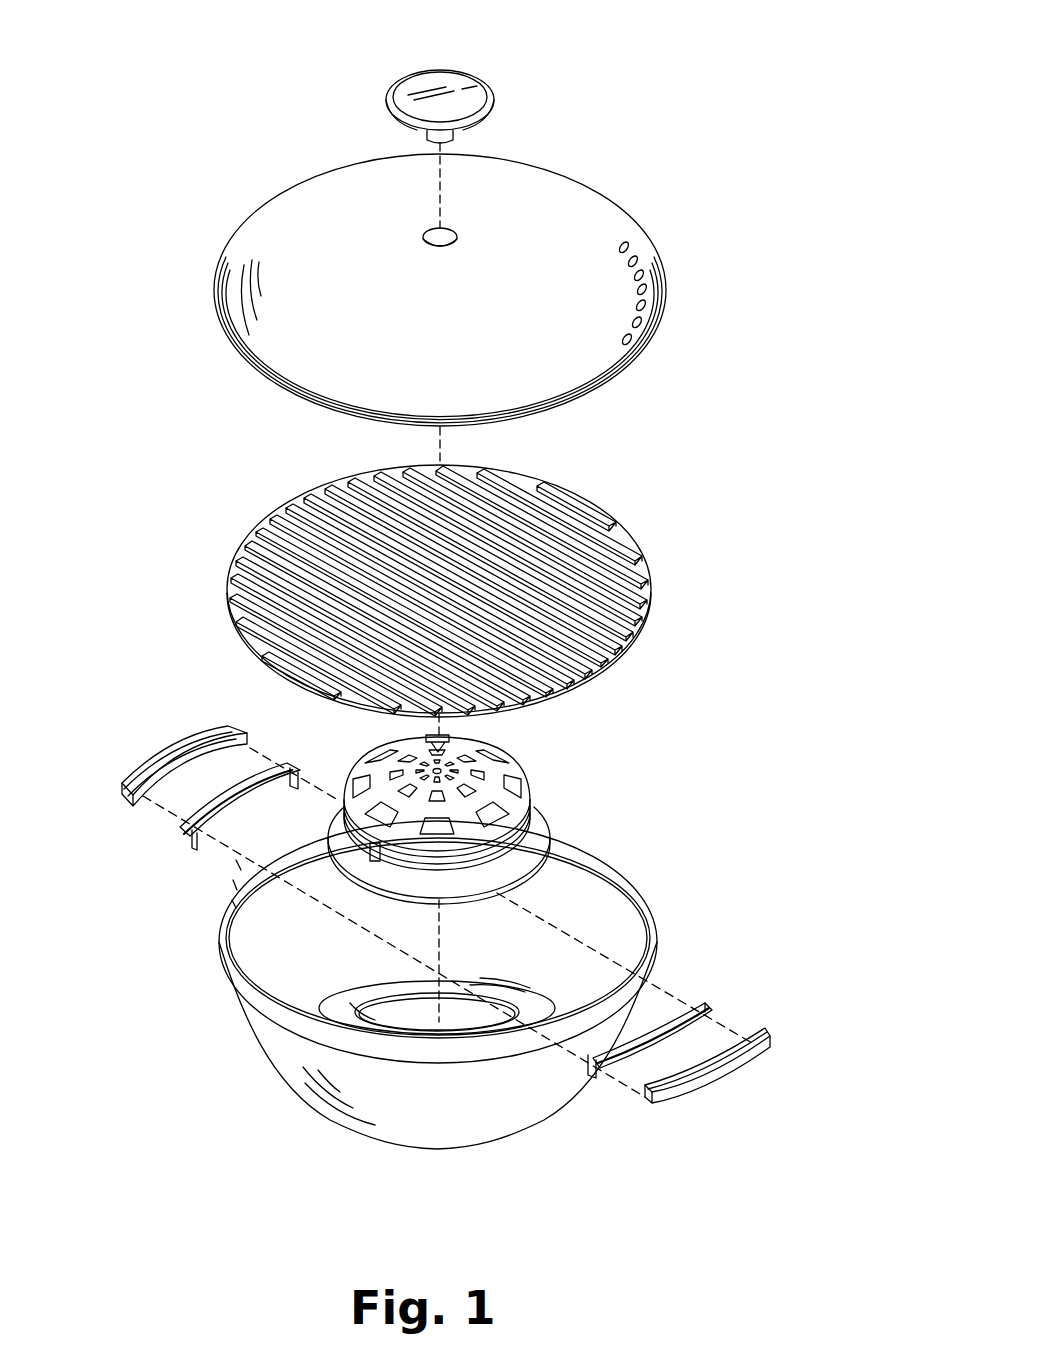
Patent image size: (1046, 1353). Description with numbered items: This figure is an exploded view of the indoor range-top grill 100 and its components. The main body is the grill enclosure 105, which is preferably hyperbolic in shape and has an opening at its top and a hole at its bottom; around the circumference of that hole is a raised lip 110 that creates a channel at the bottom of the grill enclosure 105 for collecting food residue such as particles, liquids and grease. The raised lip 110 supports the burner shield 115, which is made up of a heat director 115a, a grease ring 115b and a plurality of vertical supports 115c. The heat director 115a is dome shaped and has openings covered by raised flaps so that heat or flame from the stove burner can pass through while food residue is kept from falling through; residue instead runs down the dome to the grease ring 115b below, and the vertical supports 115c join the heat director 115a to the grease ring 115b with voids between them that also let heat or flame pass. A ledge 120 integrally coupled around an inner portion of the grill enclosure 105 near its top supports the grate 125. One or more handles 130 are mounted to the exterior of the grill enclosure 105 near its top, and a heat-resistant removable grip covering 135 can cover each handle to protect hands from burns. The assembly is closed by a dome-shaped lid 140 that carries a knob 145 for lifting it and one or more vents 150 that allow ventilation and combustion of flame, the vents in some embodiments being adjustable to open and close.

The indoor range-top grill 100 is at (218, 25).
The grill enclosure 105 is at (470, 1120).
The raised lip 110 is at (362, 1006).
The burner shield 115 is at (526, 812).
The heat director 115a is at (497, 768).
The grease ring 115b is at (518, 878).
The vertical supports 115c is at (548, 848).
The ledge 120 is at (235, 920).
The grate 125 is at (618, 560).
The handles 130 is at (690, 1005).
The removable grip covering 135 is at (757, 1040).
The lid 140 is at (296, 220).
The knob 145 is at (474, 100).
The vents 150 is at (648, 274).